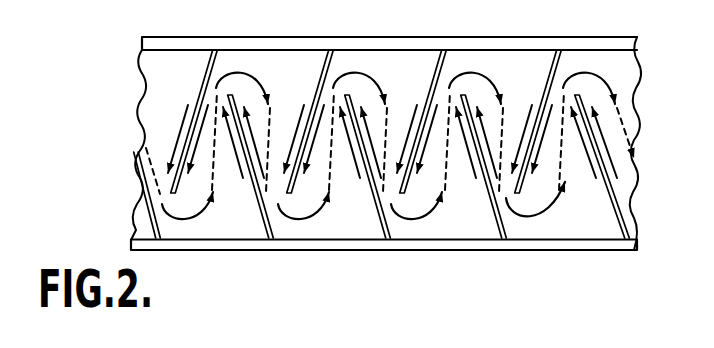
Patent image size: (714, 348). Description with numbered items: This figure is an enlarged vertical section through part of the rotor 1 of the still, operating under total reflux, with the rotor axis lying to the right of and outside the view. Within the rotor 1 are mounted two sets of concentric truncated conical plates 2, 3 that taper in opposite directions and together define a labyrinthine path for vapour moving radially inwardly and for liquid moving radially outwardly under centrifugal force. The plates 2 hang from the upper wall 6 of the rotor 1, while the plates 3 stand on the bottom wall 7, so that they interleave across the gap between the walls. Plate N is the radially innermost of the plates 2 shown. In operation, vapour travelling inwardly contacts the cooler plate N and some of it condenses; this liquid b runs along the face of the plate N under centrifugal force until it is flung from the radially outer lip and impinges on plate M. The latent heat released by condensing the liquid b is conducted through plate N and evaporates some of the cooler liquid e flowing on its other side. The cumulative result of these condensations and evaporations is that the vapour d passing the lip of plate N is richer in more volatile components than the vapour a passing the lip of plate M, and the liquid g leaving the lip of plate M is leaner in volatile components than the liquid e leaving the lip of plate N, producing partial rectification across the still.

The rotor 1 is at (628, 178).
The plates 2 is at (211, 63).
The plates 3 is at (262, 230).
The upper wall 6 is at (350, 44).
The bottom wall 7 is at (418, 252).
The plate N is at (566, 61).
The plate M is at (508, 237).
The vapour a is at (508, 107).
The liquid b is at (533, 99).
The vapour d is at (570, 172).
The liquid e is at (533, 192).
The liquid g is at (473, 92).